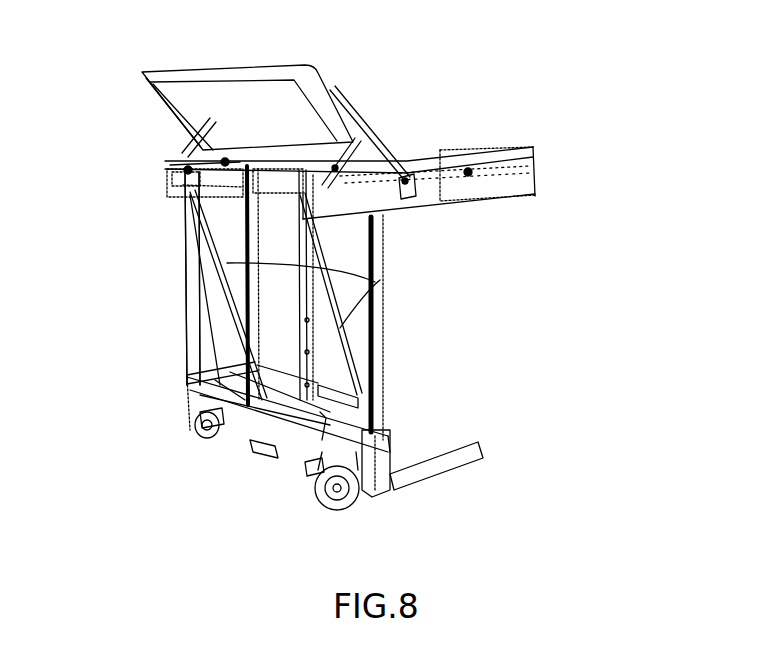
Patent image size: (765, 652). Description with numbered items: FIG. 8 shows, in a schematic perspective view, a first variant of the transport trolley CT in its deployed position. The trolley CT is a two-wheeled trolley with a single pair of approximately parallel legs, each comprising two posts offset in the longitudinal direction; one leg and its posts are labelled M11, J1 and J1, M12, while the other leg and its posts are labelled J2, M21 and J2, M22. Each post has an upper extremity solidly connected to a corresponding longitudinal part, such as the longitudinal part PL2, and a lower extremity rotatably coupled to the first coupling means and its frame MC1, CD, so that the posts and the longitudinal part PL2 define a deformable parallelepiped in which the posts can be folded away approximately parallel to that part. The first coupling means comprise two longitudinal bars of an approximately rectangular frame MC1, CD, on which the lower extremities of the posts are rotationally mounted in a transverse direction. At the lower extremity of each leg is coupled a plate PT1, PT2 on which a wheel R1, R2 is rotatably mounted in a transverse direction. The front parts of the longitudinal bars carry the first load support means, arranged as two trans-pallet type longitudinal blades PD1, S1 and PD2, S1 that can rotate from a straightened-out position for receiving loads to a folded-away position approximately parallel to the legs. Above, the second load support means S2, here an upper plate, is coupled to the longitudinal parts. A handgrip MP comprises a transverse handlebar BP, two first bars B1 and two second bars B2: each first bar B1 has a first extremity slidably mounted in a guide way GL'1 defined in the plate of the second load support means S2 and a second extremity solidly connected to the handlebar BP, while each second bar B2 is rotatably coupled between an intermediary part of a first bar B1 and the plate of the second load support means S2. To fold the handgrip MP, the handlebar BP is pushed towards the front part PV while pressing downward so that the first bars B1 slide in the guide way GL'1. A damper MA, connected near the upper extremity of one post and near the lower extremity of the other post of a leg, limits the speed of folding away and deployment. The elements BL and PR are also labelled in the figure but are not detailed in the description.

The transport trolley CT is at (440, 60).
The handgrip MP is at (318, 73).
The transverse handlebar BP is at (148, 93).
The link bar BL is at (187, 140).
The second bar B2 is at (333, 165).
The first bar B1 is at (363, 128).
The second load support means S2 is at (483, 144).
The front part PV is at (518, 139).
The rail PR is at (180, 168).
The longitudinal part PL2 is at (195, 168).
The guide way GL'1 is at (542, 198).
The first upright / first joint M11, J1 is at (386, 252).
The dampening means MA is at (375, 282).
The second joint / second upright J2, M21 is at (250, 220).
The second joint / second upright member J2, M22 is at (200, 316).
The plate PT2 is at (210, 420).
The wheel R2 is at (218, 430).
The first motor / drive MC1, CD is at (252, 447).
The first joint / member J1, M12 is at (320, 412).
The plate PT1 is at (310, 470).
The wheel R1 is at (350, 508).
The second foot / first support PD2, S1 is at (340, 382).
The first foot / first support PD1, S1 is at (467, 442).